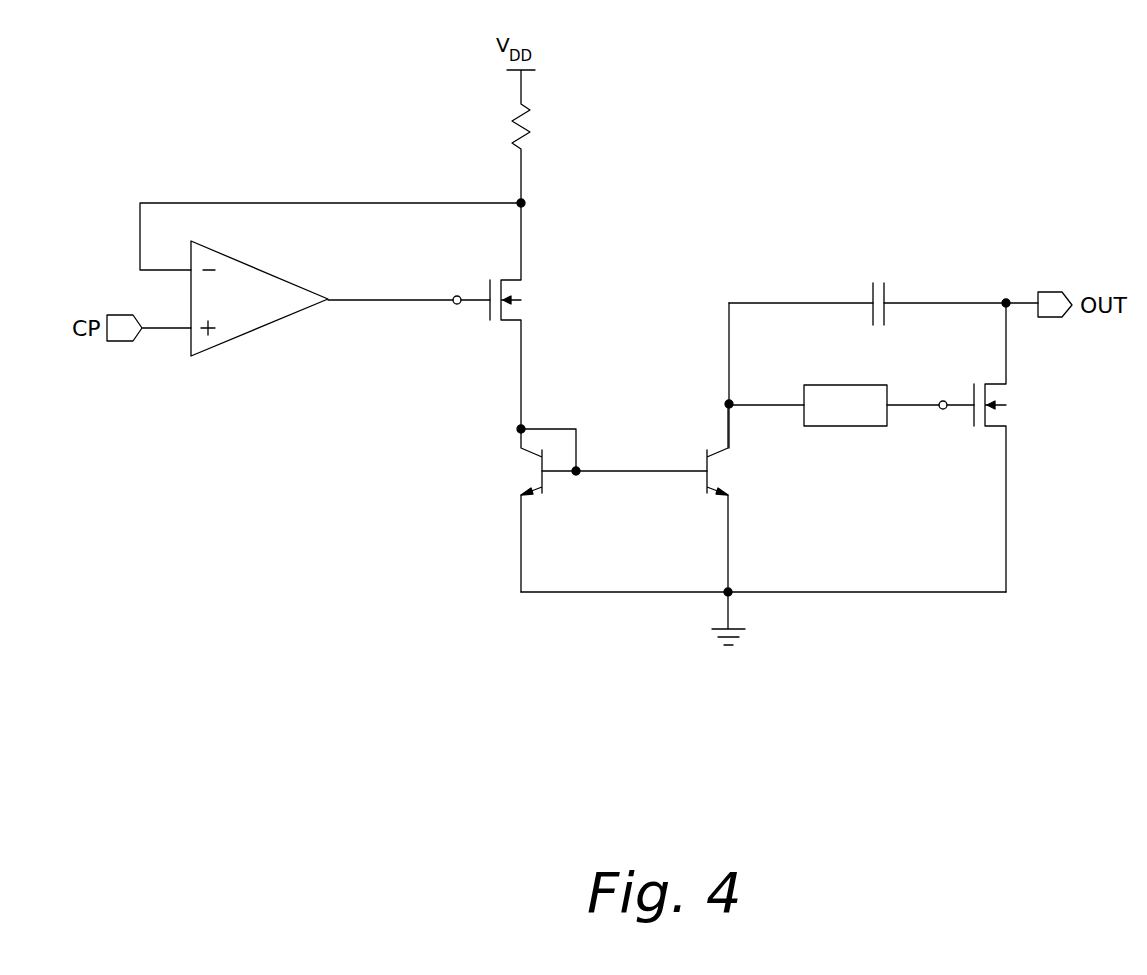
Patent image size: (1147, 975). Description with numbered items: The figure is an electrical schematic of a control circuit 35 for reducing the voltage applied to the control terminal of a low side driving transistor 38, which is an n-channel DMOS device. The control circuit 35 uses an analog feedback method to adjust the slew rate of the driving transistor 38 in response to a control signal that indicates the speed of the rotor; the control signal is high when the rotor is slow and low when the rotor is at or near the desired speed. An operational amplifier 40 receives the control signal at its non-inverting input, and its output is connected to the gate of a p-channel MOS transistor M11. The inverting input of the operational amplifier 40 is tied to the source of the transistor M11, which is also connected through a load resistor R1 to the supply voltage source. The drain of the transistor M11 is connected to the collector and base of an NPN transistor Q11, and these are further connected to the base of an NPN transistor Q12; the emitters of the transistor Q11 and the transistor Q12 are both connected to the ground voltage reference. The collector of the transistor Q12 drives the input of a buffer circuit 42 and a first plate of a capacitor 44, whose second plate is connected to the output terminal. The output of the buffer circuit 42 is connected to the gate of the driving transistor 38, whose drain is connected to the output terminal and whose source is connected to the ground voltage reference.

The control circuit 35 is at (300, 582).
The low side driving transistor 38 is at (1006, 386).
The operational amplifier 40 is at (250, 333).
The buffer circuit 42 is at (845, 426).
The capacitor 44 is at (886, 293).
The p-channel MOS transistor M11 is at (516, 282).
The NPN transistor Q11 is at (530, 456).
The NPN transistor Q12 is at (720, 456).
The load resistor R1 is at (535, 136).